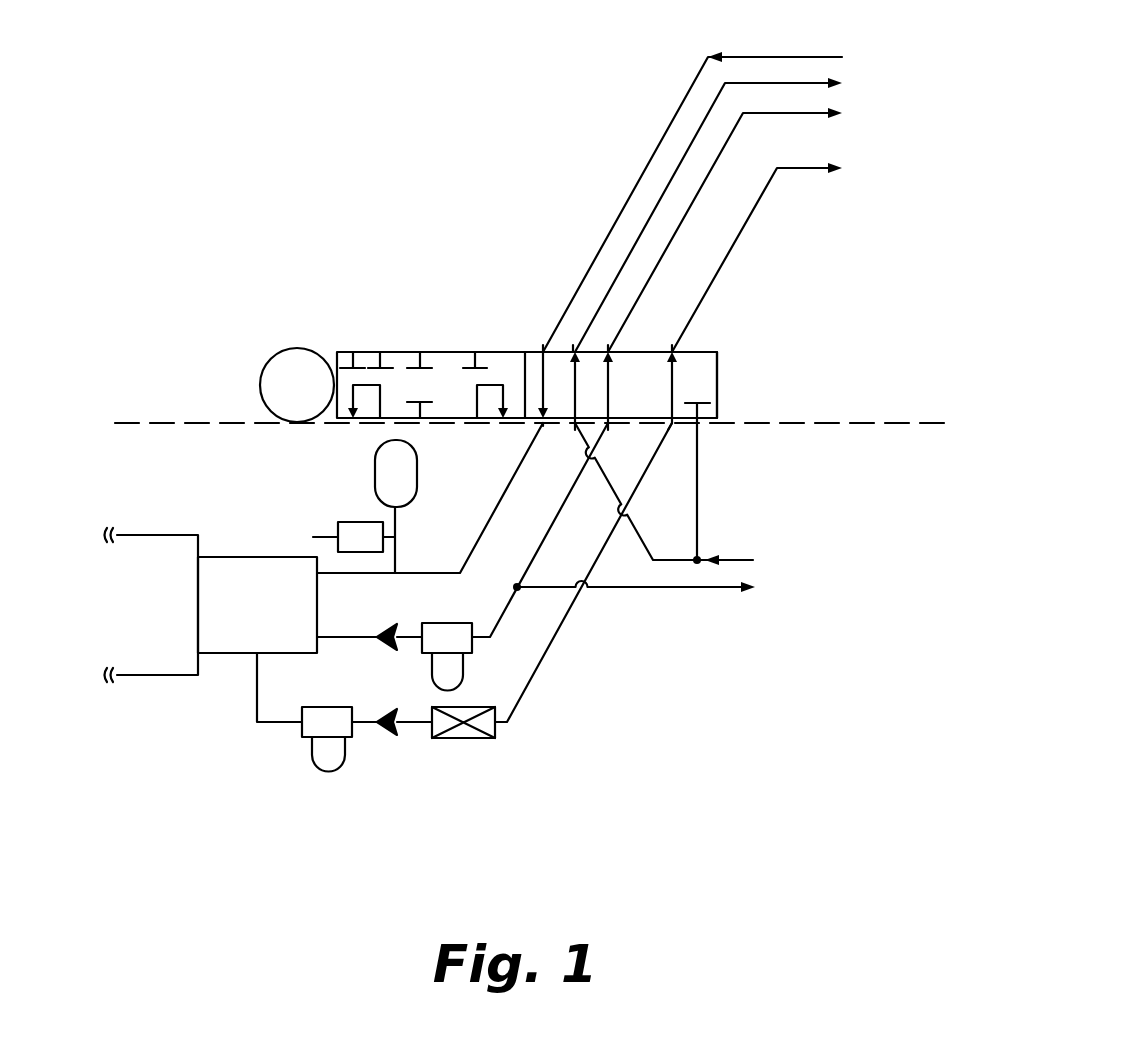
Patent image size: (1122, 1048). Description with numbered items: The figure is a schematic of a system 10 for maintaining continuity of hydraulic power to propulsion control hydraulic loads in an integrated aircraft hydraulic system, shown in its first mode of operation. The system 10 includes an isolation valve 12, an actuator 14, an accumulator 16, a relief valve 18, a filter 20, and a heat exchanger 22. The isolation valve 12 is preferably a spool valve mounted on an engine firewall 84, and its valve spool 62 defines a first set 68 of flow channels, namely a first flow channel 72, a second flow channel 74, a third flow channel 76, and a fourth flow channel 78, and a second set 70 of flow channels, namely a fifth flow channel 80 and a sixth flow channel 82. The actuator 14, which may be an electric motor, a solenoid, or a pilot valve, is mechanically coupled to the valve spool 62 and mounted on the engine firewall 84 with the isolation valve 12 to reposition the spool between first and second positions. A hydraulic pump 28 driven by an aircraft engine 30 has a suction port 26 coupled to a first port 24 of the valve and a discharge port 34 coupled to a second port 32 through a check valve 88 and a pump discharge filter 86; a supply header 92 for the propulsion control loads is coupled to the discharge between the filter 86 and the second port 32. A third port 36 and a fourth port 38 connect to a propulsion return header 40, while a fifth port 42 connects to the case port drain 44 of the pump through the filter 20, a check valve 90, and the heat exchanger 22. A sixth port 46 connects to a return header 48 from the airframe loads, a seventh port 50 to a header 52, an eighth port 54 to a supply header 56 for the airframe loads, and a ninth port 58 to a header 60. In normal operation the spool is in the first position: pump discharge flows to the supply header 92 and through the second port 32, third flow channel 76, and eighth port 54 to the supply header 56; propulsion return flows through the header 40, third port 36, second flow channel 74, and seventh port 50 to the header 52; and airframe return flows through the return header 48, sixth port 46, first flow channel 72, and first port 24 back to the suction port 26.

The system 10 is at (772, 702).
The isolation valve 12 is at (435, 326).
The actuator 14 is at (265, 349).
The accumulator 16 is at (428, 485).
The relief valve 18 is at (355, 512).
The filter 20 is at (310, 760).
The heat exchanger 22 is at (462, 750).
The first port 24 is at (542, 425).
The suction port 26 is at (325, 585).
The hydraulic pump 28 is at (230, 556).
The aircraft engine 30 is at (137, 603).
The second port 32 is at (624, 478).
The discharge port 34 is at (323, 641).
The third port 36 is at (573, 425).
The fourth port 38 is at (700, 425).
The propulsion return header 40 is at (745, 558).
The fifth port 42 is at (673, 427).
The case port drain 44 is at (264, 661).
The sixth port 46 is at (543, 350).
The return header 48 is at (815, 57).
The seventh port 50 is at (573, 350).
The header 52 is at (817, 85).
The eighth port 54 is at (612, 350).
The supply header 56 is at (817, 115).
The ninth port 58 is at (677, 350).
The header 60 is at (810, 170).
The valve spool 62 is at (730, 383).
The first set of flow channels 68 is at (638, 412).
The second set of flow channels 70 is at (453, 379).
The first flow channel 72 is at (543, 388).
The second flow channel 74 is at (577, 403).
The third flow channel 76 is at (612, 397).
The fourth flow channel 78 is at (683, 388).
The fifth flow channel 80 is at (380, 392).
The sixth flow channel 82 is at (490, 385).
The engine firewall 84 is at (157, 414).
The pump discharge filter 86 is at (476, 672).
The check valve 88 is at (401, 629).
The check valve 90 is at (396, 735).
The supply header 92 is at (688, 589).